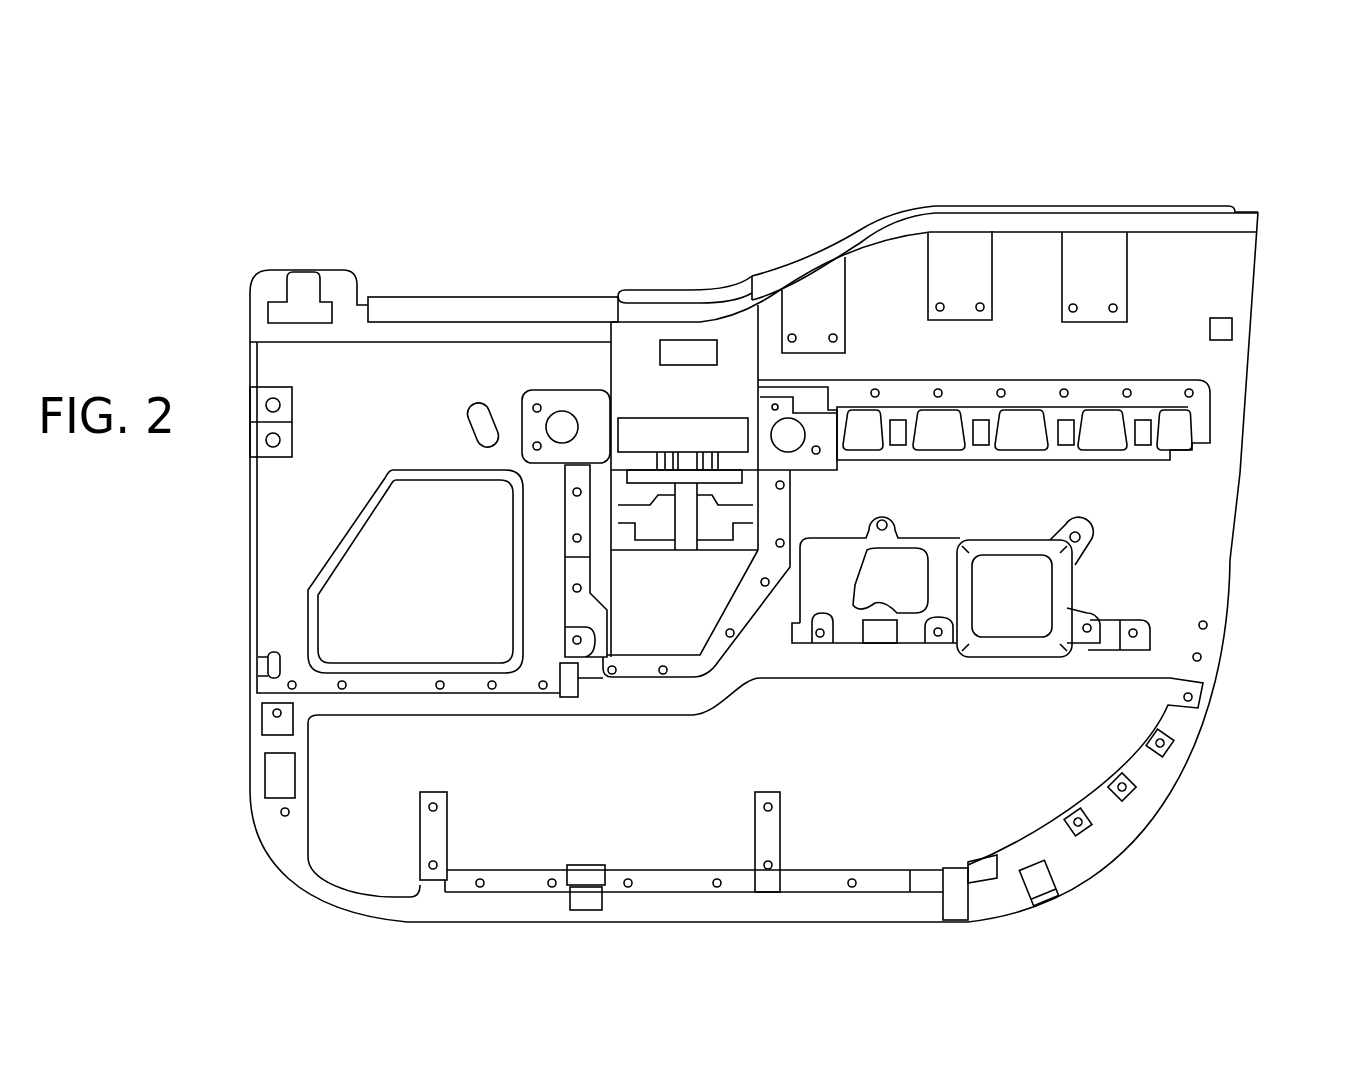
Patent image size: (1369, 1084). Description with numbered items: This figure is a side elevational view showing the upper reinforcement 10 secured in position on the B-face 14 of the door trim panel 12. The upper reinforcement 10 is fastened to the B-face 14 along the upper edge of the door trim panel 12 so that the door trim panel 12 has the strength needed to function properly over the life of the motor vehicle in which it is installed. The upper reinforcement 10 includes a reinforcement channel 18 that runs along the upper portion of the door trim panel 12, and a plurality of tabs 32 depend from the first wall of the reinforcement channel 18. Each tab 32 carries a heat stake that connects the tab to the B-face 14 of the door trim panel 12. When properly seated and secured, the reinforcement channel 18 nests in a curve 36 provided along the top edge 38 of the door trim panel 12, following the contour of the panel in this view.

The upper reinforcement 10 is at (1113, 177).
The door trim panel 12 is at (1240, 473).
The B-face 14 is at (1210, 288).
The reinforcement channel 18 is at (1185, 207).
The tabs 32 is at (1100, 280).
The curve 36 is at (902, 227).
The top edge 38 is at (1013, 203).